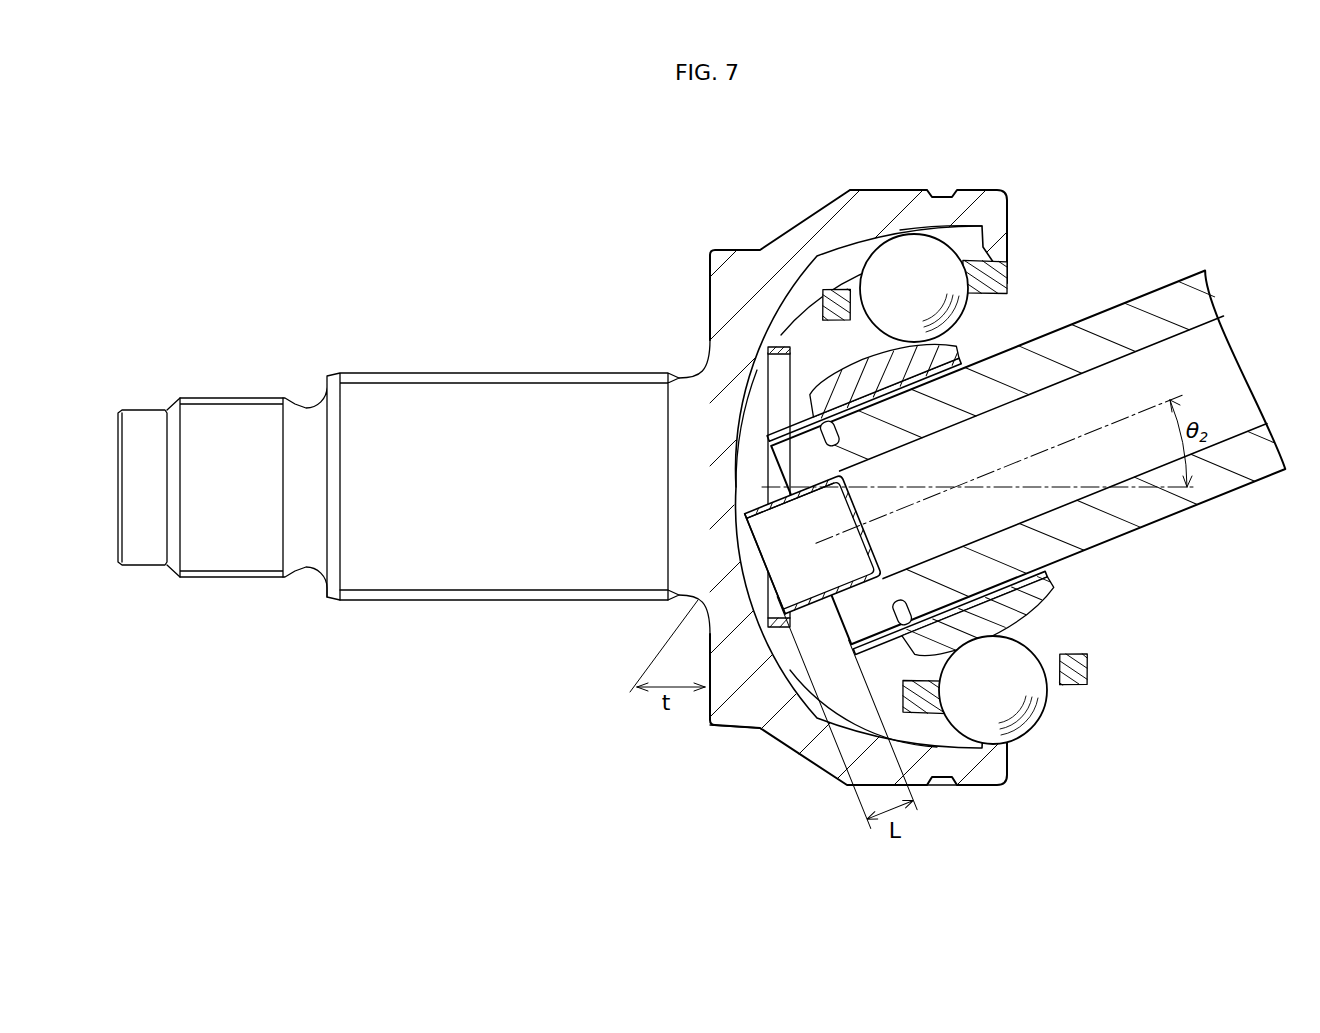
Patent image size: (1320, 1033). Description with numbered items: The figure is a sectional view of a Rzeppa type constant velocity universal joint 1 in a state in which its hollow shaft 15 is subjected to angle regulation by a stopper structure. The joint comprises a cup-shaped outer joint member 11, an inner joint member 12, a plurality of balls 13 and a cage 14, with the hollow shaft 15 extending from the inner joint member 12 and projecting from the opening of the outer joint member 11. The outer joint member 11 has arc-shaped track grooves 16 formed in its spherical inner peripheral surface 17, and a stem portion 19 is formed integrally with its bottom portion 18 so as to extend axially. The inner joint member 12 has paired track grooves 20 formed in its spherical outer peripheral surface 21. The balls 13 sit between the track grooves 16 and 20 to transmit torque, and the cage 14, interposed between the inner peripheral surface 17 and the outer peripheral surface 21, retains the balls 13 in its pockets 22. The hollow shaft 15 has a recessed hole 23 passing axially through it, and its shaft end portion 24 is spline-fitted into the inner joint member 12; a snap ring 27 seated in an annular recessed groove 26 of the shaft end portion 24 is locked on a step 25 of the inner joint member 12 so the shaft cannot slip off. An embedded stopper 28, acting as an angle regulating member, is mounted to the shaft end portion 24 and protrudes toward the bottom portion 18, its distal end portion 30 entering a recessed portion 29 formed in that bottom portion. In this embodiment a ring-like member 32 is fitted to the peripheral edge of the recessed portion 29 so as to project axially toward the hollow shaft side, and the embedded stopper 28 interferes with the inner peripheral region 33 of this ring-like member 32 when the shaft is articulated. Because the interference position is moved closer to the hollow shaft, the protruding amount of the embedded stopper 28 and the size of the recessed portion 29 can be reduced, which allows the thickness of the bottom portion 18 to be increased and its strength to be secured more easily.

The Rzeppa type constant velocity universal joint 1 is at (647, 211).
The outer joint member 11 is at (795, 206).
The inner joint member 12 is at (1000, 350).
The balls 13 is at (1046, 738).
The cage 14 is at (1089, 676).
The hollow shaft 15 is at (1186, 522).
The track grooves 16 is at (947, 235).
The spherical inner peripheral surface 17 is at (935, 760).
The bottom portion 18 is at (738, 715).
The stem portion 19 is at (464, 374).
The track grooves 20 is at (1070, 606).
The spherical outer peripheral surface 21 is at (1073, 665).
The pockets 22 is at (1040, 697).
The recessed hole 23 is at (1115, 360).
The shaft end portion 24 is at (715, 470).
The step 25 is at (748, 454).
The annular recessed groove 26 is at (835, 433).
The snap ring 27 is at (902, 600).
The embedded stopper 28 is at (758, 542).
The recessed portion 29 is at (735, 418).
The distal end portion 30 is at (765, 513).
The ring-like member 32 is at (781, 337).
The inner peripheral region 33 is at (820, 690).